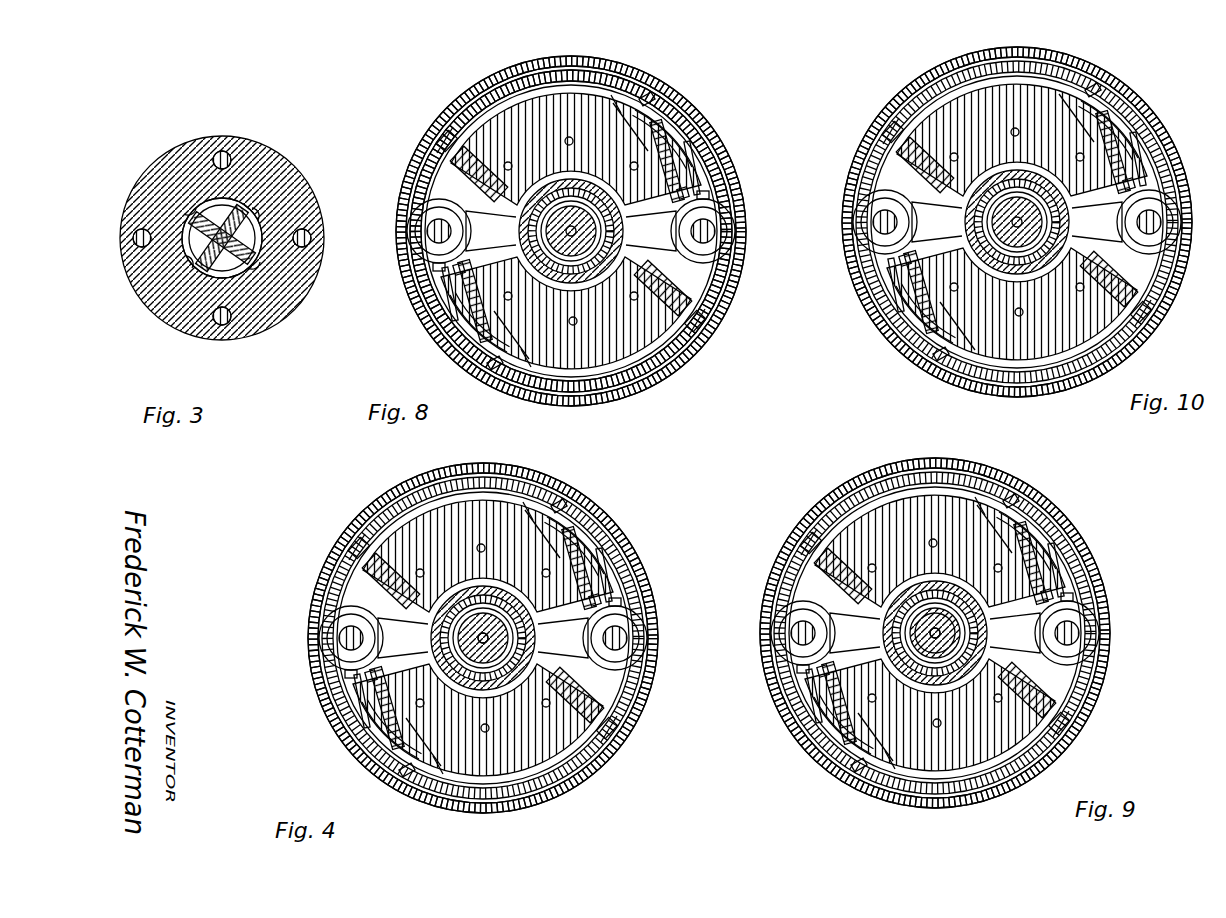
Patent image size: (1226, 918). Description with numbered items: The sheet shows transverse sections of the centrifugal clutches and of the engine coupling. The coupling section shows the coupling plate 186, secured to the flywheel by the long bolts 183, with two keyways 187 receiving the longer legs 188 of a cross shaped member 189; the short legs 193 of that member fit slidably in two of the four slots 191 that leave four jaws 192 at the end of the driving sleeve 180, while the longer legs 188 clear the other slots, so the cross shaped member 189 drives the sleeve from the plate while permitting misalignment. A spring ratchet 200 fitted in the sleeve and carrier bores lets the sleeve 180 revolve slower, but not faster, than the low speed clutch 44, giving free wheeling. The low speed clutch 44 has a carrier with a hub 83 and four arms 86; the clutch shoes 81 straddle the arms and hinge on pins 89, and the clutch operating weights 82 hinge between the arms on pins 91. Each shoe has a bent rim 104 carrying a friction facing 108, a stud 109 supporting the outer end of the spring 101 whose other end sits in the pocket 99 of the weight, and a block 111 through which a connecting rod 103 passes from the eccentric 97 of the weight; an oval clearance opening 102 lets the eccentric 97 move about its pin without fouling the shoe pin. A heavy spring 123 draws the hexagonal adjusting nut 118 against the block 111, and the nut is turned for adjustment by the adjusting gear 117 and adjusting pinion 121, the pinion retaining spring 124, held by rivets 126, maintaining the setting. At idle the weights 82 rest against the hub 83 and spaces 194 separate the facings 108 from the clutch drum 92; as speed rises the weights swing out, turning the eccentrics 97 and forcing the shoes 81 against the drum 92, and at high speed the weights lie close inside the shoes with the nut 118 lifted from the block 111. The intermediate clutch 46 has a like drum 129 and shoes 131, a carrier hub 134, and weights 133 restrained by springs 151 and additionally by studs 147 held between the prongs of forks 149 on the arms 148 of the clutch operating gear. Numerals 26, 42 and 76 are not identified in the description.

In FIG. 8, the shaft 26 is at (585, 226).
In FIG. 10, the shaft 26 is at (1007, 259).
In FIG. 4, the shaft 26 is at (480, 639).
In FIG. 9, the shaft 26 is at (914, 633).
In FIG. 10, the hub 42 is at (977, 275).
In FIG. 4, the hub 42 is at (445, 643).
In FIG. 9, the hub 42 is at (968, 658).
In FIG. 8, the low speed clutch 44 is at (428, 112).
In FIG. 4, the low speed clutch 44 is at (345, 522).
In FIG. 9, the low speed clutch 44 is at (1054, 769).
In FIG. 10, the intermediate clutch 46 is at (1152, 103).
In FIG. 10, the bearing sleeve 76 is at (1017, 252).
In FIG. 8, the clutch shoes 81 is at (576, 228).
In FIG. 4, the clutch shoes 81 is at (455, 499).
In FIG. 9, the clutch shoes 81 is at (964, 488).
In FIG. 8, the clutch operating weights 82 is at (538, 128).
In FIG. 4, the clutch operating weights 82 is at (483, 518).
In FIG. 9, the clutch operating weights 82 is at (907, 494).
In FIG. 8, the hub portion 83 is at (555, 231).
In FIG. 4, the hub portion 83 is at (513, 618).
In FIG. 9, the hub portion 83 is at (900, 605).
In FIG. 8, the arms 86 is at (571, 231).
In FIG. 4, the arms 86 is at (427, 665).
In FIG. 9, the arms 86 is at (868, 665).
In FIG. 8, the hinge pins 89 is at (704, 232).
In FIG. 4, the hinge pins 89 is at (628, 639).
In FIG. 9, the hinge pins 89 is at (1093, 633).
In FIG. 8, the hinge pins 91 is at (718, 228).
In FIG. 4, the hinge pins 91 is at (570, 641).
In FIG. 9, the hinge pins 91 is at (1079, 608).
In FIG. 8, the clutch drum 92 is at (522, 66).
In FIG. 4, the clutch drum 92 is at (390, 498).
In FIG. 9, the clutch drum 92 is at (945, 462).
In FIG. 8, the eccentric 97 is at (694, 208).
In FIG. 4, the eccentric 97 is at (617, 618).
In FIG. 9, the eccentric 97 is at (1089, 647).
In FIG. 8, the pocket 99 is at (728, 350).
In FIG. 4, the pocket 99 is at (375, 583).
In FIG. 9, the pocket 99 is at (1057, 697).
In FIG. 8, the spring 101 is at (442, 140).
In FIG. 4, the spring 101 is at (350, 543).
In FIG. 9, the spring 101 is at (1064, 697).
In FIG. 8, the oval clearance opening 102 is at (708, 244).
In FIG. 4, the oval clearance opening 102 is at (627, 628).
In FIG. 9, the oval clearance opening 102 is at (1089, 622).
In FIG. 8, the connecting rods 103 is at (688, 185).
In FIG. 4, the connecting rods 103 is at (613, 604).
In FIG. 9, the connecting rods 103 is at (1064, 594).
In FIG. 8, the rim 104 is at (548, 100).
In FIG. 4, the rim 104 is at (427, 494).
In FIG. 9, the rim 104 is at (911, 463).
In FIG. 8, the facing 108 is at (492, 95).
In FIG. 4, the facing 108 is at (405, 488).
In FIG. 9, the facing 108 is at (921, 460).
In FIG. 8, the stud 109 is at (447, 155).
In FIG. 4, the stud 109 is at (365, 567).
In FIG. 9, the stud 109 is at (1068, 715).
In FIG. 8, the block 111 is at (676, 152).
In FIG. 4, the block 111 is at (593, 564).
In FIG. 9, the block 111 is at (1050, 569).
In FIG. 8, the adjusting gear 117 is at (672, 141).
In FIG. 4, the adjusting gear 117 is at (587, 558).
In FIG. 9, the adjusting gear 117 is at (1039, 544).
In FIG. 8, the adjusting nut 118 is at (660, 118).
In FIG. 4, the adjusting nut 118 is at (580, 551).
In FIG. 9, the adjusting nut 118 is at (1029, 544).
In FIG. 8, the adjusting pinion 121 is at (642, 95).
In FIG. 4, the adjusting pinion 121 is at (570, 541).
In FIG. 9, the adjusting pinion 121 is at (1011, 526).
In FIG. 8, the heavy spring 123 is at (677, 165).
In FIG. 4, the heavy spring 123 is at (600, 581).
In FIG. 9, the heavy spring 123 is at (1057, 580).
In FIG. 8, the pinion retaining spring 124 is at (527, 355).
In FIG. 4, the pinion retaining spring 124 is at (537, 508).
In FIG. 9, the pinion retaining spring 124 is at (1004, 512).
In FIG. 8, the rivets 126 is at (607, 104).
In FIG. 4, the rivets 126 is at (553, 488).
In FIG. 9, the rivets 126 is at (989, 505).
In FIG. 10, the drum 129 is at (1140, 62).
In FIG. 10, the shoes 131 is at (1047, 88).
In FIG. 10, the clutch weights 133 is at (990, 128).
In FIG. 10, the hub 134 is at (1038, 332).
In FIG. 10, the stud 147 is at (1137, 195).
In FIG. 10, the arms 148 is at (1120, 182).
In FIG. 10, the fork 149 is at (900, 172).
In FIG. 10, the springs 151 is at (921, 121).
In FIG. 8, the driving sleeve 180 is at (517, 243).
In FIG. 4, the driving sleeve 180 is at (527, 631).
In FIG. 9, the driving sleeve 180 is at (950, 594).
In FIG. 3, the bolts 183 is at (218, 152).
In FIG. 3, the coupling plate 186 is at (167, 170).
In FIG. 3, the keyways 187 is at (260, 160).
In FIG. 3, the longer legs 188 is at (267, 183).
In FIG. 3, the cross shaped member 189 is at (193, 213).
In FIG. 3, the slots 191 is at (219, 203).
In FIG. 3, the jaws 192 is at (213, 200).
In FIG. 3, the short legs 193 is at (183, 233).
In FIG. 8, the spaces 194 is at (485, 92).
In FIG. 9, the spring ratchet 200 is at (961, 615).